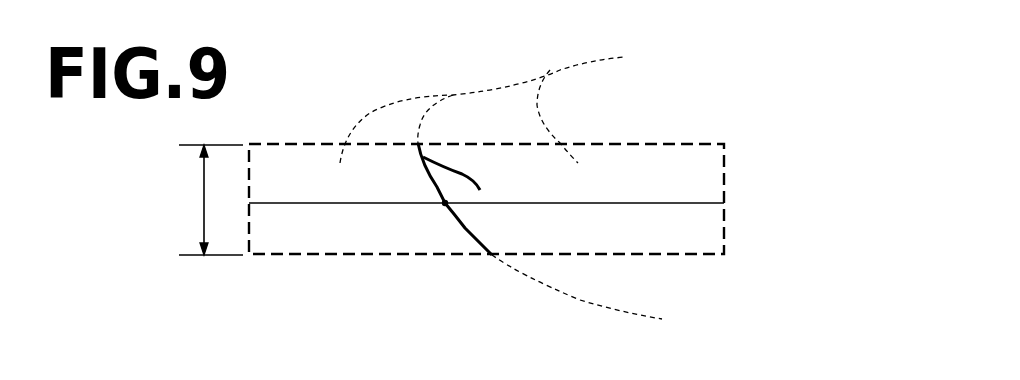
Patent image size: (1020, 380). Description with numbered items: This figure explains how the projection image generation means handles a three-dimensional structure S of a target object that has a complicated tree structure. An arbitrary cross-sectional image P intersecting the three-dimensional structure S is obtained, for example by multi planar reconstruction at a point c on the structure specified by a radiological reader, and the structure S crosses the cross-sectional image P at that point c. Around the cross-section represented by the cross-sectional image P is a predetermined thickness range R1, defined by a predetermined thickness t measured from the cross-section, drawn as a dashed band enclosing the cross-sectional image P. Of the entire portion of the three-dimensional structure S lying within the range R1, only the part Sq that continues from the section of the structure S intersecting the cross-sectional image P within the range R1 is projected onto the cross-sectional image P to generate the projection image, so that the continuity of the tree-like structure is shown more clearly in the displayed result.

The predetermined thickness t is at (211, 200).
The three-dimensional structure S is at (512, 75).
The part continuing from the section intersecting the cross-sectional image Sq is at (463, 168).
The point on the three-dimensional structure c is at (432, 197).
The predetermined thickness range R1 is at (692, 141).
The cross-sectional image P is at (690, 203).